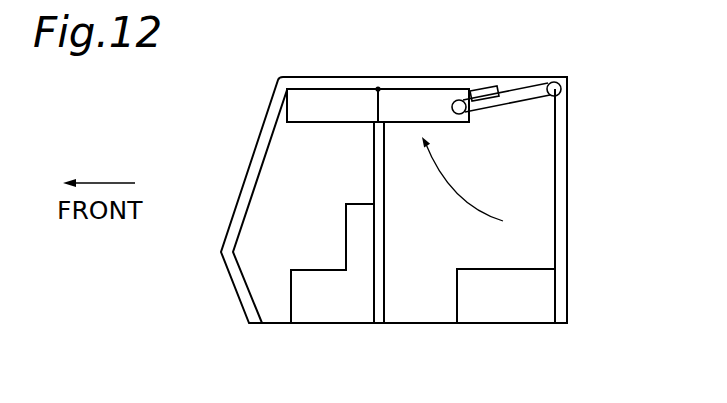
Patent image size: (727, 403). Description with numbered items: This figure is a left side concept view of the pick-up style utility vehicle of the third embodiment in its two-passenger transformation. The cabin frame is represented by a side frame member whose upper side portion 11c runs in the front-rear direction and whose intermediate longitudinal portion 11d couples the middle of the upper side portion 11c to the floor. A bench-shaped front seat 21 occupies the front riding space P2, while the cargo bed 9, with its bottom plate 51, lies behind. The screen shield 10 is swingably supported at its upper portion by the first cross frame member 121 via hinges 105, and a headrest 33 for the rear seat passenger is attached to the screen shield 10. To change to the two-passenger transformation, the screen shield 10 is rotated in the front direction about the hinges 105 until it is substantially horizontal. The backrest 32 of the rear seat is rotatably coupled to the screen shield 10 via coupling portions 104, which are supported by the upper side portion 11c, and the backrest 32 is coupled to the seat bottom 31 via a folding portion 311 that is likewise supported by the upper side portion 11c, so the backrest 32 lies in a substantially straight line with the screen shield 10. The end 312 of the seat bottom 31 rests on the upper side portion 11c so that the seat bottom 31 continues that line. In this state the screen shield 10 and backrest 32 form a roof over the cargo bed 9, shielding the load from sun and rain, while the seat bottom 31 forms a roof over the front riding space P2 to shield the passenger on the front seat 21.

The screen shield 10 is at (498, 113).
The upper side portion 11c is at (343, 83).
The intermediate longitudinal portion 11d is at (383, 220).
The cargo bed 9 is at (540, 257).
The front seat 21 is at (315, 327).
The seat bottom 31 is at (314, 89).
The folding portion 311 is at (379, 89).
The end 312 is at (288, 108).
The backrest 32 is at (437, 104).
The headrest 33 is at (492, 88).
The bottom plate 51 is at (513, 269).
The coupling portions 104 is at (465, 98).
The hinges 105 is at (563, 83).
The first cross frame member 121 is at (558, 82).
The front riding space P2 is at (313, 158).